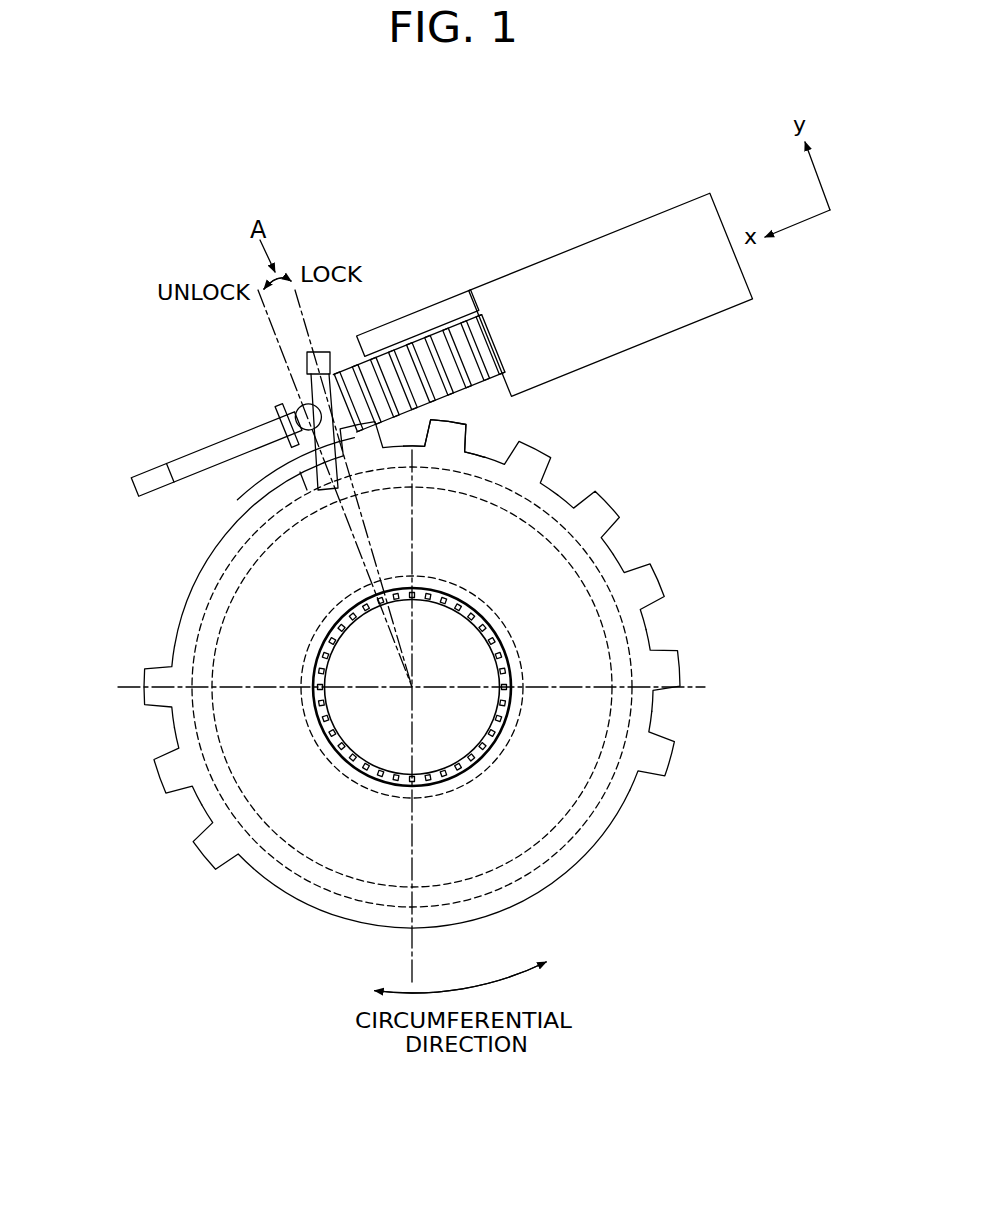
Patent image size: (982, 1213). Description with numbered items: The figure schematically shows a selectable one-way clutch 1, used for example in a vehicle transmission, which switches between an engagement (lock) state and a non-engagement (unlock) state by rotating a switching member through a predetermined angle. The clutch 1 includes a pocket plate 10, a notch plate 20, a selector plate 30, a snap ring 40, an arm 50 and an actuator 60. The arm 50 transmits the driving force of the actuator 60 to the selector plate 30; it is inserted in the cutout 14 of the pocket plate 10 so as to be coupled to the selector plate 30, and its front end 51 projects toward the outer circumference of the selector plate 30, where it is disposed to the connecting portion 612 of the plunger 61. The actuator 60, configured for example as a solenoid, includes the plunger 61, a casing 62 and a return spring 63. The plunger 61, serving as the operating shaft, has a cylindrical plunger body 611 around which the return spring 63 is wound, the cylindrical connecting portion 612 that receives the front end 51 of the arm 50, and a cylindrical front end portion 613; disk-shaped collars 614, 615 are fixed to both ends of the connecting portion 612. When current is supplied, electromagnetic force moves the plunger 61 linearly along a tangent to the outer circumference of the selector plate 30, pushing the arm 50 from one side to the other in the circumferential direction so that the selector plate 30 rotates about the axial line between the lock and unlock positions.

The selectable one-way clutch 1 is at (78, 336).
The pocket plate 10 is at (597, 825).
The cutout 14 is at (420, 462).
The notch plate 20 is at (520, 663).
The selector plate 30 is at (600, 733).
The snap ring 40 is at (607, 772).
The arm 50 is at (277, 483).
The front end 51 is at (307, 440).
The actuator 60 is at (411, 363).
The plunger 61 is at (228, 450).
The casing 62 is at (708, 334).
The return spring 63 is at (418, 323).
The plunger body 611 is at (419, 373).
The connecting portion 612 is at (308, 417).
The front end portion 613 is at (216, 454).
The collar 614 is at (287, 426).
The collar 615 is at (305, 378).